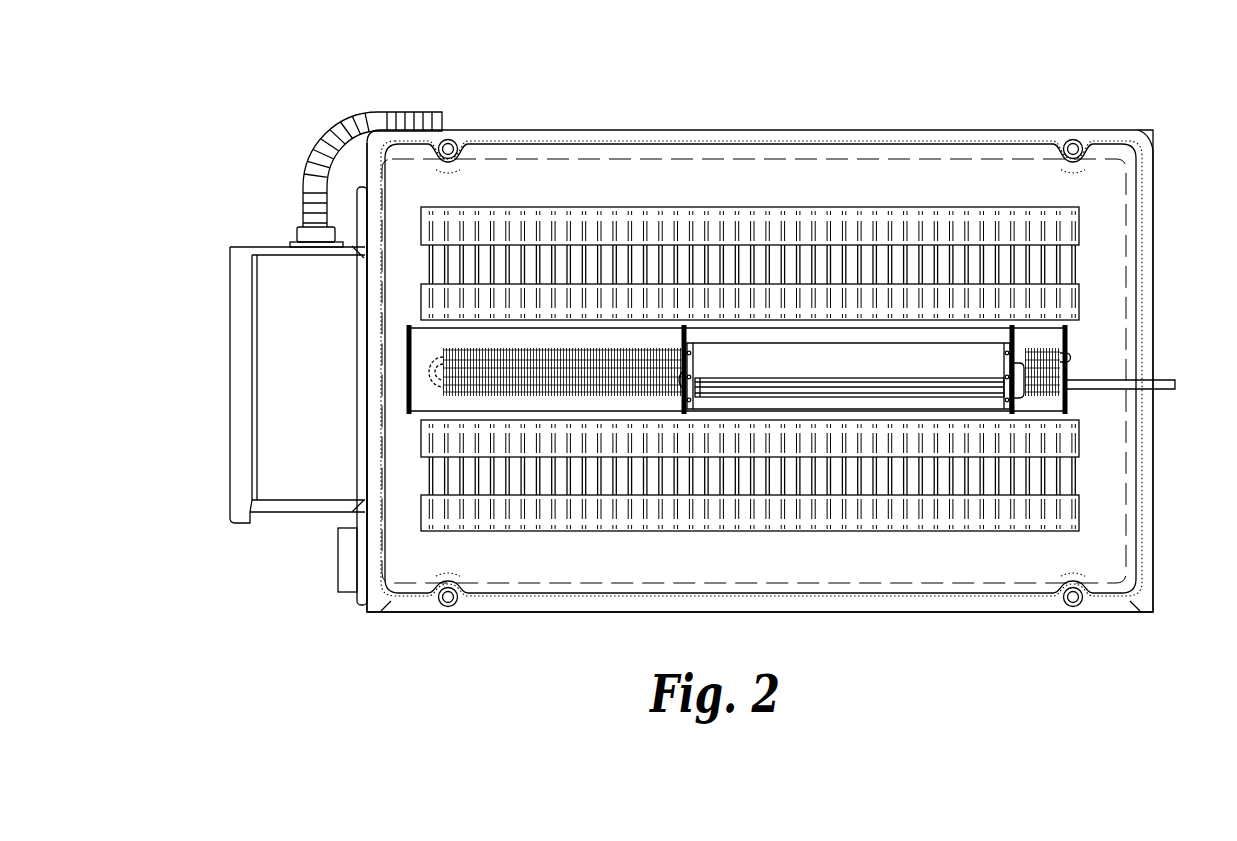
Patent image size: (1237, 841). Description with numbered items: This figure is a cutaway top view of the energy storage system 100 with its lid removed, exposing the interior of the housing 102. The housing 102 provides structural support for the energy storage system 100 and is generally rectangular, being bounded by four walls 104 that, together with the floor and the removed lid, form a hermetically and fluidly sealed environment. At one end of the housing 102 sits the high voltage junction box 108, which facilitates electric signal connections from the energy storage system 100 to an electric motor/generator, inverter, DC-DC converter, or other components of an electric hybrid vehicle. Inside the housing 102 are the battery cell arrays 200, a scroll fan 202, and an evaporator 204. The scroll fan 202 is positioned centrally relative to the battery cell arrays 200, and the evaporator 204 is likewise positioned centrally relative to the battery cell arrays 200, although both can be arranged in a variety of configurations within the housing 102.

The energy storage system 100 is at (824, 632).
The housing 102 is at (546, 622).
The walls 104 is at (846, 128).
The high voltage junction box 108 is at (277, 303).
The battery cell arrays 200 is at (943, 265).
The scroll fan 202 is at (957, 357).
The evaporator 204 is at (608, 357).